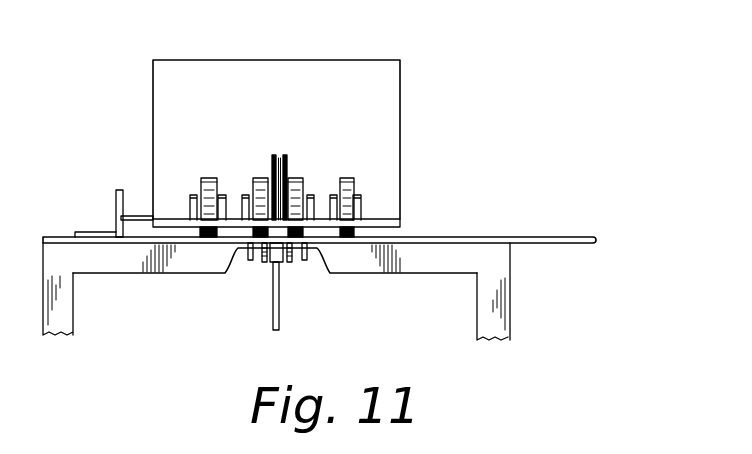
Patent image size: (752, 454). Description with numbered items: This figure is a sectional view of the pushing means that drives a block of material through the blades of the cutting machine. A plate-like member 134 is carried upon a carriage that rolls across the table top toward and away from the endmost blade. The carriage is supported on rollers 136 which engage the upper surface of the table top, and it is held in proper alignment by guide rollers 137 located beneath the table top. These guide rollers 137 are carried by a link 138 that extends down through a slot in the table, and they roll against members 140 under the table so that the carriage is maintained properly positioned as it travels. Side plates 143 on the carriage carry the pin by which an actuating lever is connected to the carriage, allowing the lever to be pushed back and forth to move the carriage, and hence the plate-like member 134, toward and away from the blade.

The plate-like member 134 is at (183, 60).
The rollers 136 is at (252, 178).
The guide rollers 137 is at (262, 263).
The link 138 is at (280, 268).
The members 140 is at (250, 262).
The side plates 143 is at (272, 157).